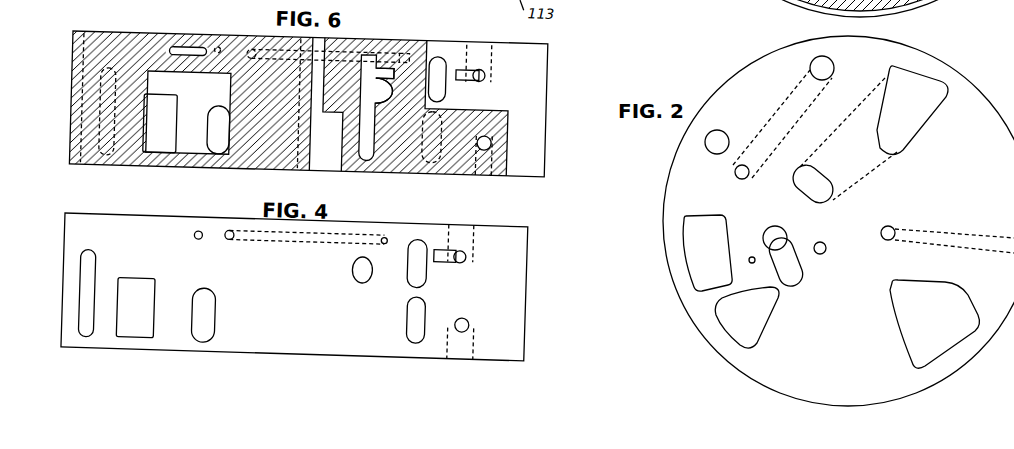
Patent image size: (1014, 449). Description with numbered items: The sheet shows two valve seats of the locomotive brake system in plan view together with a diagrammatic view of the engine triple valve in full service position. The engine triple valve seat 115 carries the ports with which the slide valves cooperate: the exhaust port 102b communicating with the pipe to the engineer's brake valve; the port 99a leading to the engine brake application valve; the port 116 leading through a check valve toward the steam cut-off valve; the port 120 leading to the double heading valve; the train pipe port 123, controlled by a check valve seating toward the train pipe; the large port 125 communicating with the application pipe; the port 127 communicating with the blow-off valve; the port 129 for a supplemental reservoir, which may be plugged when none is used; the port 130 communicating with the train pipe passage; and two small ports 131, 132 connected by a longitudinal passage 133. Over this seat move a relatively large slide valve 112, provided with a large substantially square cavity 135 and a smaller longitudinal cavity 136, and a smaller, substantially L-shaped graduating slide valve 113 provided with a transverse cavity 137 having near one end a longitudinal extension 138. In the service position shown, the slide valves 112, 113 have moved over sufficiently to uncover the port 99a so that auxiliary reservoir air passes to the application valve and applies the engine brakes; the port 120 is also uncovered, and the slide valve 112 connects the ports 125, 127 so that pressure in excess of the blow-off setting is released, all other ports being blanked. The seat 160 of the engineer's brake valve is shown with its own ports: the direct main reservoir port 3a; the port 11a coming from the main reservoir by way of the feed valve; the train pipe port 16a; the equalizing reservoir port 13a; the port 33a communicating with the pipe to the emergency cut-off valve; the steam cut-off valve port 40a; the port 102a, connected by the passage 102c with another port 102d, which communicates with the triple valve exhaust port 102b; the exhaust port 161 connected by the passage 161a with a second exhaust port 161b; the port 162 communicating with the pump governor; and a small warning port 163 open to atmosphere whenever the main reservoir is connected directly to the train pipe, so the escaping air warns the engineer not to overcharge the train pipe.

In FIG. 6, the slide valve 112 is at (140, 31).
In FIG. 6, the graduating slide valve 113 is at (512, 165).
In FIG. 6, the valve seat 115 is at (484, 109).
In FIG. 4, the valve seat 115 is at (256, 271).
In FIG. 6, the port 116 is at (494, 132).
In FIG. 4, the port 116 is at (467, 307).
In FIG. 6, the port 120 is at (486, 64).
In FIG. 4, the port 120 is at (468, 245).
In FIG. 6, the port 123 is at (106, 109).
In FIG. 4, the port 123 is at (91, 266).
In FIG. 6, the port 125 is at (160, 123).
In FIG. 4, the port 125 is at (135, 308).
In FIG. 6, the port 127 is at (216, 127).
In FIG. 4, the port 127 is at (213, 328).
In FIG. 6, the port 129 is at (378, 72).
In FIG. 4, the port 129 is at (353, 268).
In FIG. 6, the port 130 is at (220, 43).
In FIG. 4, the port 130 is at (199, 226).
In FIG. 6, the port 131 is at (254, 45).
In FIG. 4, the port 131 is at (232, 225).
In FIG. 4, the port 132 is at (387, 227).
In FIG. 4, the longitudinal passage 133 is at (338, 225).
In FIG. 6, the cavity 135 is at (188, 112).
In FIG. 6, the longitudinal cavity 136 is at (200, 44).
In FIG. 6, the transverse cavity 137 is at (372, 120).
In FIG. 6, the longitudinal extension 138 is at (392, 60).
In FIG. 6, the port 99a is at (438, 54).
In FIG. 4, the port 99a is at (421, 238).
In FIG. 6, the exhaust port 102b is at (441, 104).
In FIG. 4, the exhaust port 102b is at (411, 318).
In FIG. 2, the port 102a is at (830, 66).
In FIG. 2, the passage 102c is at (785, 125).
In FIG. 2, the port 102d is at (740, 177).
In FIG. 2, the equalizing reservoir port 13a is at (720, 133).
In FIG. 2, the exhaust port 161 is at (912, 110).
In FIG. 2, the passage 161a is at (848, 139).
In FIG. 2, the second exhaust port 161b is at (826, 200).
In FIG. 2, the port 162 is at (890, 227).
In FIG. 2, the direct main reservoir port 3a is at (707, 253).
In FIG. 2, the port 33a is at (782, 237).
In FIG. 2, the steam cut-off valve port 40a is at (825, 251).
In FIG. 2, the warning port 163 is at (752, 263).
In FIG. 2, the port 11a is at (747, 317).
In FIG. 2, the train pipe port 16a is at (934, 324).
In FIG. 2, the valve seat 160 is at (838, 221).